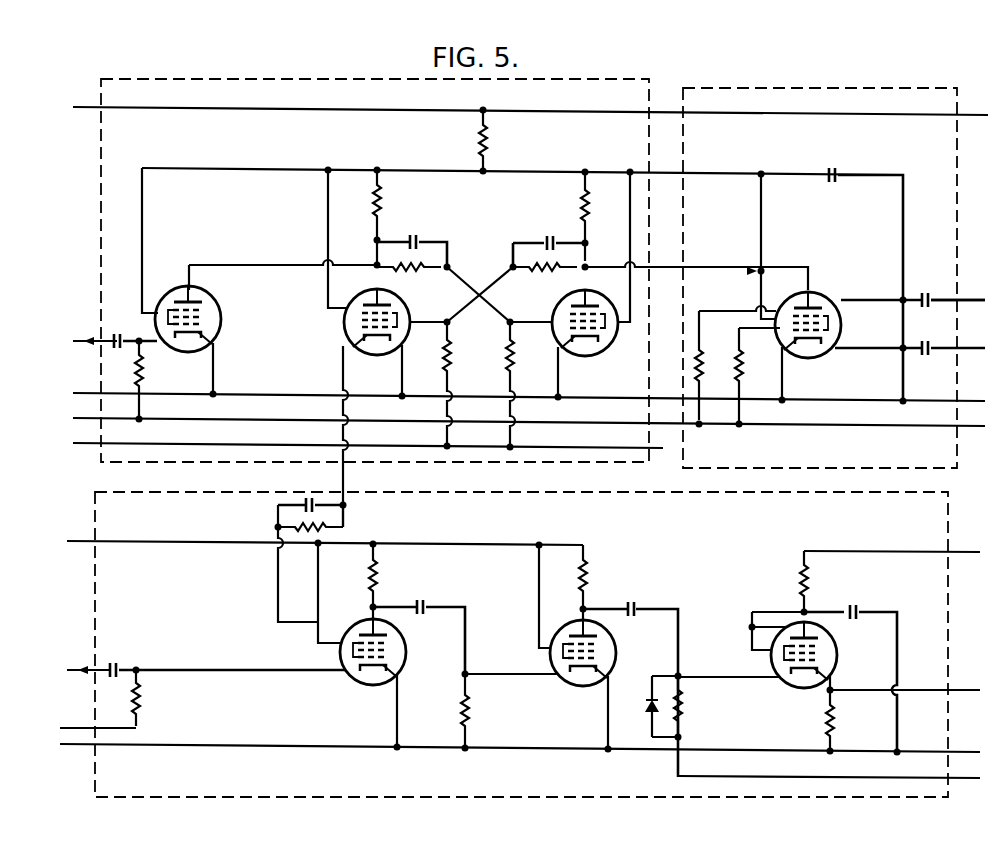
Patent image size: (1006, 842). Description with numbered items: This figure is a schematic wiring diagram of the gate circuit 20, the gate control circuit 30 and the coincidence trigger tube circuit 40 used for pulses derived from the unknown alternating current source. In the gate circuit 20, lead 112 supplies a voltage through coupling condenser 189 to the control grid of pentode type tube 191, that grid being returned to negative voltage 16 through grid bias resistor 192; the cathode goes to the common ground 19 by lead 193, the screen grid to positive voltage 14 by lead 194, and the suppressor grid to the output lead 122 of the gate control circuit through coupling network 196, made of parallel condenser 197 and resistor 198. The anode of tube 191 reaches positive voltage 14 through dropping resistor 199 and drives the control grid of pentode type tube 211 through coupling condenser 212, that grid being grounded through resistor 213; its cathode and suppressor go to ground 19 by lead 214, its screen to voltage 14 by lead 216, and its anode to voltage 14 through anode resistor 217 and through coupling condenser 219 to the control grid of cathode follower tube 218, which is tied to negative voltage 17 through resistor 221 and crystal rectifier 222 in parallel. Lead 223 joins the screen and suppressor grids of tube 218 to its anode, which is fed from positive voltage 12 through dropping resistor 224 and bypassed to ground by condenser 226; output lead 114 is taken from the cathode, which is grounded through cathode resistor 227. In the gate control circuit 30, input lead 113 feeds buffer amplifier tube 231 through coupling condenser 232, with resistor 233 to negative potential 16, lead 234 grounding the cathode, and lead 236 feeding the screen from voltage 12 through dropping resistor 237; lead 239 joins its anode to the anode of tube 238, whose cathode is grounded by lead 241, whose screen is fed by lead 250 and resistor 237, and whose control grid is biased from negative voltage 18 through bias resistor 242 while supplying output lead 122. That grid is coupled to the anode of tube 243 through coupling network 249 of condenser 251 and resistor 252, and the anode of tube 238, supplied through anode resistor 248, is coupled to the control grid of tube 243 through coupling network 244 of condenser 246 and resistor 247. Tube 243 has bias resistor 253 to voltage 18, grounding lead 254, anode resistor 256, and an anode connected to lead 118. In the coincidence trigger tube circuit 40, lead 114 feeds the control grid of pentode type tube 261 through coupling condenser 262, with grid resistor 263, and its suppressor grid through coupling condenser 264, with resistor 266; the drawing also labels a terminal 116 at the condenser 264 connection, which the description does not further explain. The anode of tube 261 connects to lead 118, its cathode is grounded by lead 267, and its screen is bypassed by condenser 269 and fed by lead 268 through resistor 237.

The positive voltage 12 is at (974, 126).
The positive voltage 14 is at (74, 542).
The negative voltage 16 is at (76, 721).
The negative voltage 17 is at (968, 779).
The negative voltage 18 is at (80, 444).
The common ground connection 19 is at (964, 762).
The gate circuit 20 is at (95, 492).
The gate control circuit 30 is at (318, 86).
The coincidence trigger tube circuit 40 is at (838, 94).
The lead 112 is at (74, 667).
The input lead 113 is at (80, 338).
The output lead 114 is at (970, 684).
The output terminal 116 is at (968, 302).
The lead 118 is at (649, 276).
The output lead 122 is at (352, 482).
The coupling condenser 189 is at (117, 653).
The pentode type tube 191 is at (402, 636).
The grid bias resistor 192 is at (140, 700).
The lead 193 is at (394, 718).
The lead 194 is at (319, 588).
The coupling network 196 is at (330, 523).
The condenser 197 is at (308, 496).
The resistor 198 is at (328, 541).
The dropping resistor 199 is at (377, 584).
The pentode type tube 211 is at (612, 637).
The coupling condenser 212 is at (425, 592).
The resistor 213 is at (469, 712).
The lead 214 is at (606, 718).
The lead 216 is at (538, 604).
The anode resistor 217 is at (587, 583).
The cathode follower tube 218 is at (833, 640).
The coupling condenser 219 is at (634, 594).
The resistor 221 is at (682, 718).
The crystal rectifier 222 is at (642, 700).
The lead 223 is at (752, 618).
The dropping resistor 224 is at (802, 578).
The condenser 226 is at (853, 603).
The cathode resistor 227 is at (834, 722).
The buffer amplifier tube 231 is at (213, 300).
The coupling condenser 232 is at (116, 330).
The resistor 233 is at (143, 375).
The lead 234 is at (215, 378).
The lead 236 is at (142, 216).
The dropping resistor 237 is at (484, 140).
The tube 238 is at (406, 306).
The lead 239 is at (214, 262).
The lead 241 is at (400, 378).
The bias resistor 242 is at (446, 372).
The tube 243 is at (612, 295).
The coupling network 244 is at (442, 251).
The condenser 246 is at (414, 225).
The resistor 247 is at (415, 274).
The anode resistor 248 is at (381, 200).
The coupling network 249 is at (524, 262).
The lead 250 is at (327, 216).
The condenser 251 is at (555, 228).
The resistor 252 is at (546, 274).
The bias resistor 253 is at (504, 372).
The lead 254 is at (561, 380).
The anode resistor 256 is at (580, 205).
The pentode type tube 261 is at (826, 293).
The coupling condenser 262 is at (925, 356).
The grid resistor 263 is at (743, 370).
The coupling condenser 264 is at (925, 292).
The resistor 266 is at (703, 370).
The lead 267 is at (784, 382).
The lead 268 is at (761, 232).
The condenser 269 is at (832, 163).